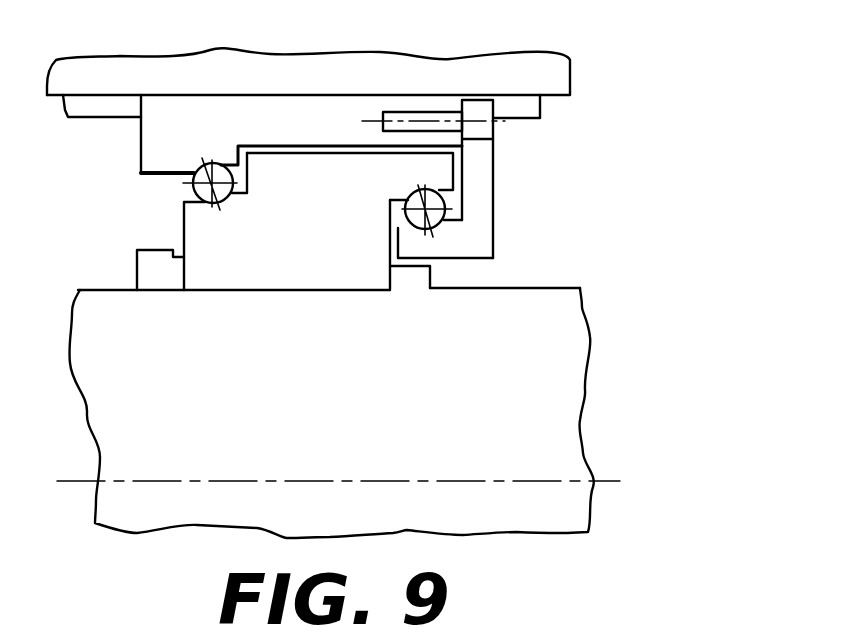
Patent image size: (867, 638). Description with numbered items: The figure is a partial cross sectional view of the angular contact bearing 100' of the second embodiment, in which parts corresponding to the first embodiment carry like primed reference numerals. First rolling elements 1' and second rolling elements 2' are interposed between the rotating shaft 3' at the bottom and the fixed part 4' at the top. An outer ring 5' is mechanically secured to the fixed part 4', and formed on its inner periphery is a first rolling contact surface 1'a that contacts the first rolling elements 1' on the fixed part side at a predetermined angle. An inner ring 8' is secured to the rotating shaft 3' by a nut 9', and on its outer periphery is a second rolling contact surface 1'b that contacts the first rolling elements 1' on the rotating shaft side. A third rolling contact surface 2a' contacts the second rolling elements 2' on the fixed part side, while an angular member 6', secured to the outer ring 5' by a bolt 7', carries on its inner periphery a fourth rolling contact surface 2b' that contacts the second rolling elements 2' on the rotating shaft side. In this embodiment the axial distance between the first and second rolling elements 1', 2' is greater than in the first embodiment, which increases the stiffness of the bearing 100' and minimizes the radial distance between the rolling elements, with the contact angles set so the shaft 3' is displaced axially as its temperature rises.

The fixed part 4' is at (308, 66).
The outer ring 5' is at (113, 134).
The first rolling contact surface 1'a is at (134, 168).
The first rolling elements 1' is at (172, 184).
The second rolling contact surface 1'b is at (270, 193).
The angular contact bearing 100' is at (445, 171).
The angular member 6' is at (519, 179).
The bolt 7' is at (433, 82).
The third rolling contact surface 2a' is at (350, 183).
The second rolling elements 2' is at (473, 211).
The fourth rolling contact surface 2b' is at (484, 244).
The inner ring 8' is at (158, 246).
The nut 9' is at (116, 270).
The rotating shaft 3' is at (351, 413).